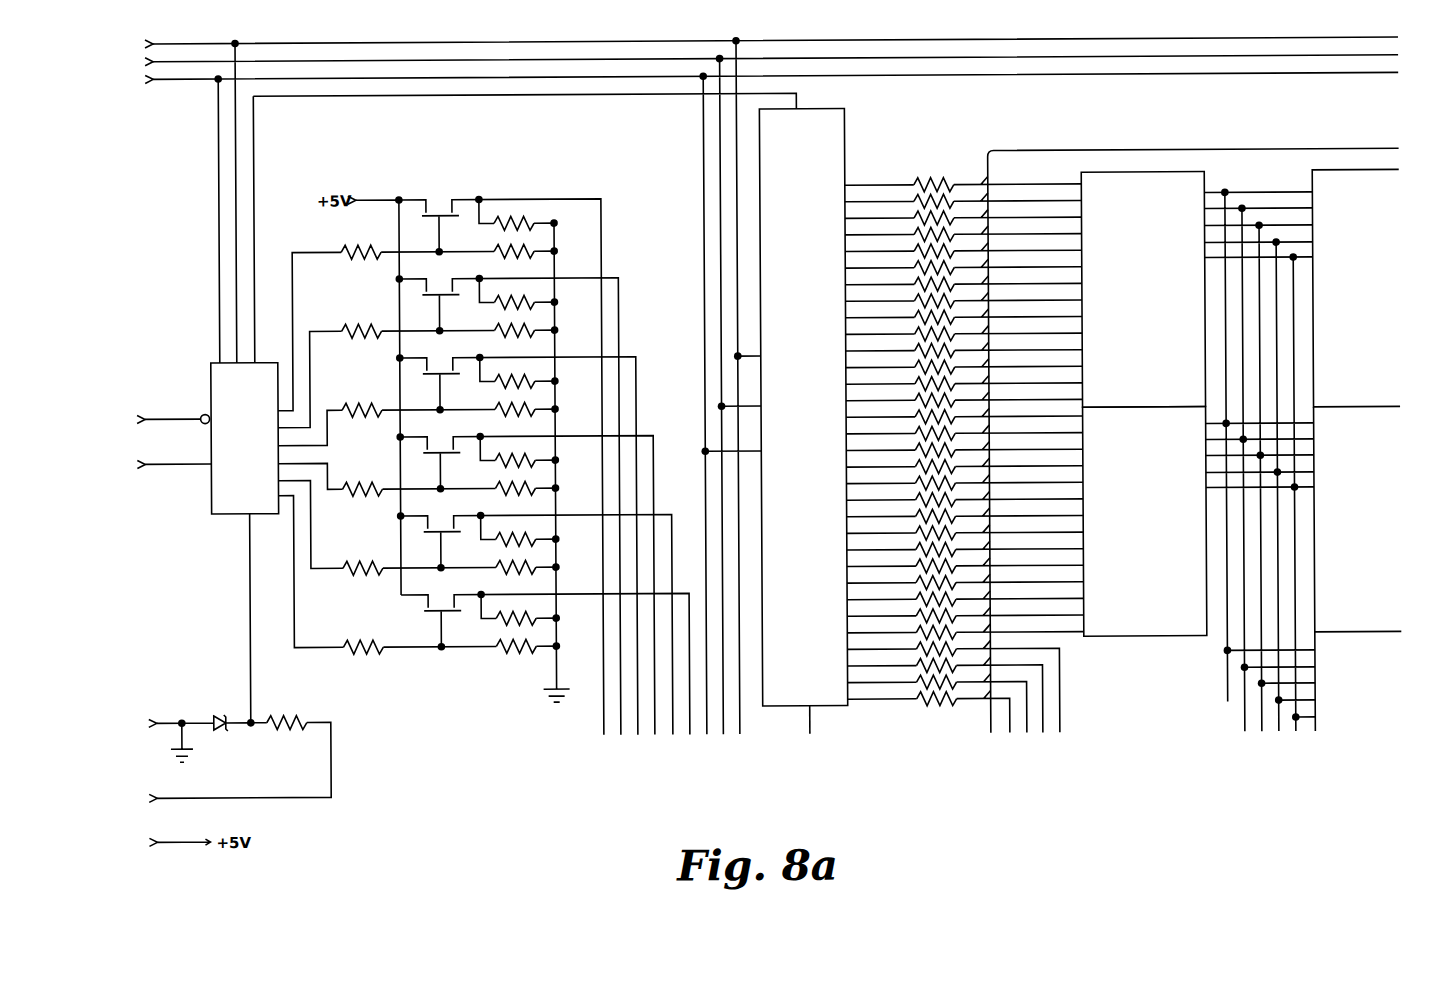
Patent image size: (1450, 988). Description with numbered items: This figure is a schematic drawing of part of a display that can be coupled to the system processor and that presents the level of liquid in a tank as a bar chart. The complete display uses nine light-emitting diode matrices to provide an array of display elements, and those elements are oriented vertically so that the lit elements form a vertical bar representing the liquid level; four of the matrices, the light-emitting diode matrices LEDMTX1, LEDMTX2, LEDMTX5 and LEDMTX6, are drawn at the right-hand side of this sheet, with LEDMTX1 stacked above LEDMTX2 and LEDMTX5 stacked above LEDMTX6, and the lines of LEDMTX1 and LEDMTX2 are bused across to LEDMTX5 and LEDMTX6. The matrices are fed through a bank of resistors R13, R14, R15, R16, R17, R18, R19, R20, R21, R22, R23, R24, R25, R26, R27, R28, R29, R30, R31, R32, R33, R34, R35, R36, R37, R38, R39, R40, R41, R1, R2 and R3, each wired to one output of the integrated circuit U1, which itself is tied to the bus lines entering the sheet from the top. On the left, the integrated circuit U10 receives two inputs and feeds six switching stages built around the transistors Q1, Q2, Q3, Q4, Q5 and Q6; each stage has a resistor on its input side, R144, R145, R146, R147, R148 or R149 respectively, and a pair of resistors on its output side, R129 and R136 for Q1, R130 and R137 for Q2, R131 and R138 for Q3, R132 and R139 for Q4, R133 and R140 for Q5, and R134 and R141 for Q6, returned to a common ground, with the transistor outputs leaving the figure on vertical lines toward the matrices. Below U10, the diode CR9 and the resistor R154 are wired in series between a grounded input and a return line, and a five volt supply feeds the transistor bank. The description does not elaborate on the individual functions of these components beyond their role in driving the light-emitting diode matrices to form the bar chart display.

The driver integrated circuit U10 is at (208, 543).
The LED controller integrated circuit U1 is at (803, 421).
The transistor Q1 is at (545, 664).
The transistor Q2 is at (501, 467).
The transistor Q3 is at (519, 546).
The transistor Q4 is at (527, 585).
The transistor Q5 is at (510, 506).
The transistor Q6 is at (537, 624).
The resistor R129 is at (542, 609).
The resistor R130 is at (540, 214).
The resistor R131 is at (541, 372).
The resistor R132 is at (541, 451).
The resistor R133 is at (541, 293).
The resistor R134 is at (542, 530).
The resistor R136 is at (495, 647).
The resistor R137 is at (493, 252).
The resistor R138 is at (494, 410).
The resistor R139 is at (494, 489).
The resistor R140 is at (494, 331).
The resistor R141 is at (495, 568).
The resistor R144 is at (333, 575).
The resistor R145 is at (331, 316).
The resistor R146 is at (331, 412).
The resistor R147 is at (331, 478).
The resistor R148 is at (331, 364).
The resistor R149 is at (331, 528).
The resistor R154 is at (240, 747).
The zener diode CR9 is at (202, 728).
The resistor R13 is at (963, 179).
The resistor R14 is at (963, 196).
The resistor R15 is at (963, 212).
The resistor R16 is at (963, 229).
The resistor R17 is at (963, 245).
The resistor R18 is at (963, 262).
The resistor R19 is at (963, 279).
The resistor R20 is at (963, 295).
The resistor R21 is at (963, 312).
The resistor R22 is at (964, 328).
The resistor R23 is at (964, 345).
The resistor R24 is at (964, 362).
The resistor R25 is at (964, 378).
The resistor R26 is at (964, 395).
The resistor R27 is at (964, 411).
The resistor R28 is at (964, 428).
The resistor R29 is at (964, 444).
The resistor R30 is at (964, 461).
The resistor R31 is at (964, 478).
The resistor R32 is at (964, 494).
The resistor R33 is at (965, 511).
The resistor R34 is at (965, 527).
The resistor R35 is at (965, 544).
The resistor R36 is at (965, 560).
The resistor R37 is at (965, 577).
The resistor R38 is at (965, 594).
The resistor R39 is at (965, 610).
The resistor R40 is at (965, 627).
The resistor R41 is at (953, 683).
The resistor R1 is at (944, 690).
The resistor R2 is at (936, 699).
The resistor R3 is at (929, 708).
The light-emitting diode matrix LEDMTX1 is at (1143, 290).
The light-emitting diode matrix LEDMTX2 is at (1145, 522).
The light-emitting diode matrix LEDMTX5 is at (1356, 287).
The light-emitting diode matrix LEDMTX6 is at (1358, 568).